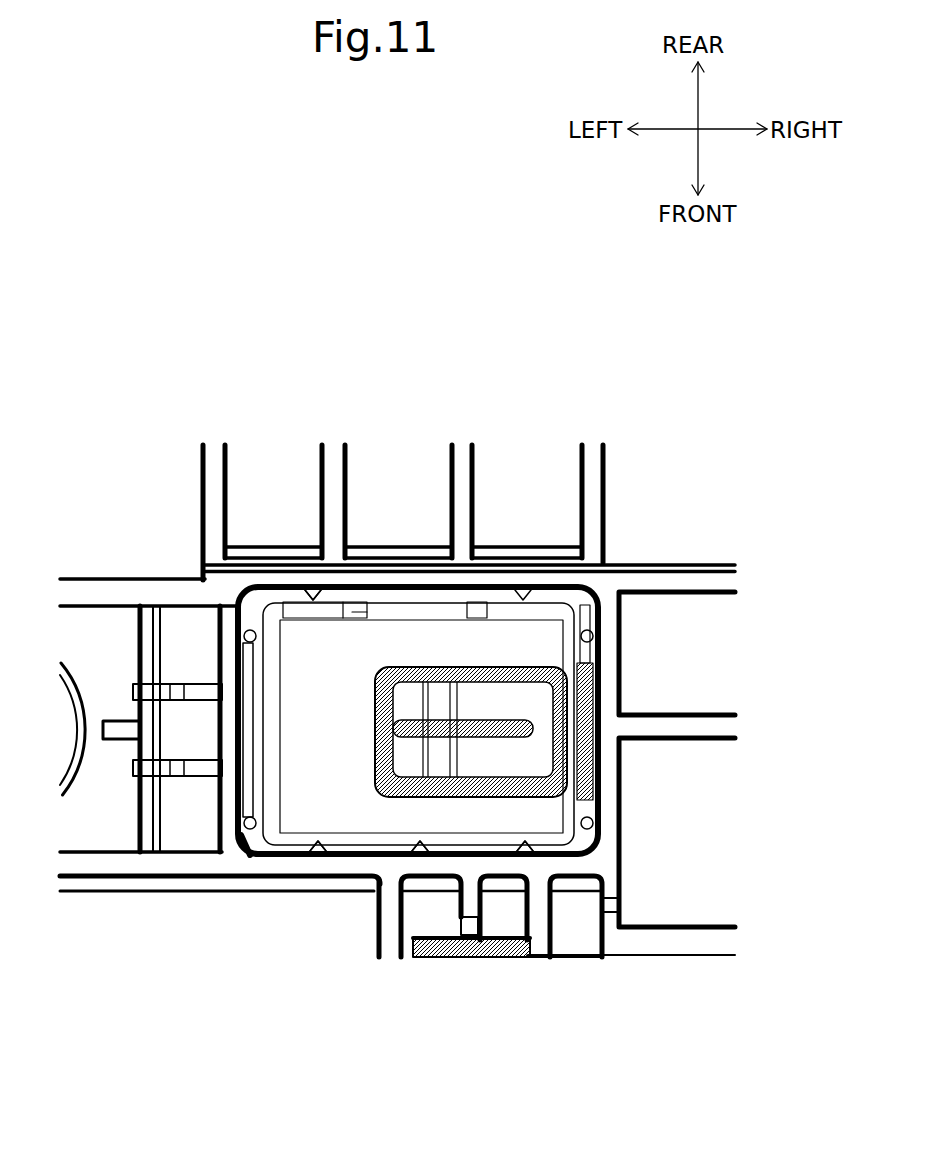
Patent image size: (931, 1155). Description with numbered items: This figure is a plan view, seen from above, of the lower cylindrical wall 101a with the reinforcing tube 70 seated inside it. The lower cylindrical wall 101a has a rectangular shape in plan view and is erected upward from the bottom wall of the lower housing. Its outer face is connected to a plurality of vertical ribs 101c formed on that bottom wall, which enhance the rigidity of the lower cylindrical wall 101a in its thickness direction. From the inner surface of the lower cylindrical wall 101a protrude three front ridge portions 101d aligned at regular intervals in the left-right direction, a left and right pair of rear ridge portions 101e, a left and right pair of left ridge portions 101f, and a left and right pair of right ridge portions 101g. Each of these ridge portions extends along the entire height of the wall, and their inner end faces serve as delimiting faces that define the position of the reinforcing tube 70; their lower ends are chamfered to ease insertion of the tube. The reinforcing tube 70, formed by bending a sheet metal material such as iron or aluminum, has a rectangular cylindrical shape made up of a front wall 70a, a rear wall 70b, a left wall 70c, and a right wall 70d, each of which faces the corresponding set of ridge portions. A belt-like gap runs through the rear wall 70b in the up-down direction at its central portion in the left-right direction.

The reinforcing tube 70 is at (352, 852).
The front wall 70a is at (470, 843).
The rear wall 70b is at (318, 615).
The left wall 70c is at (272, 722).
The right wall 70d is at (580, 627).
The lower cylindrical wall 101a is at (265, 878).
The vertical ribs 101c is at (465, 470).
The front ridge portions 101d is at (518, 850).
The rear ridge portions 101e is at (477, 604).
The left ridge portions 101f is at (274, 720).
The right ridge portions 101g is at (603, 823).